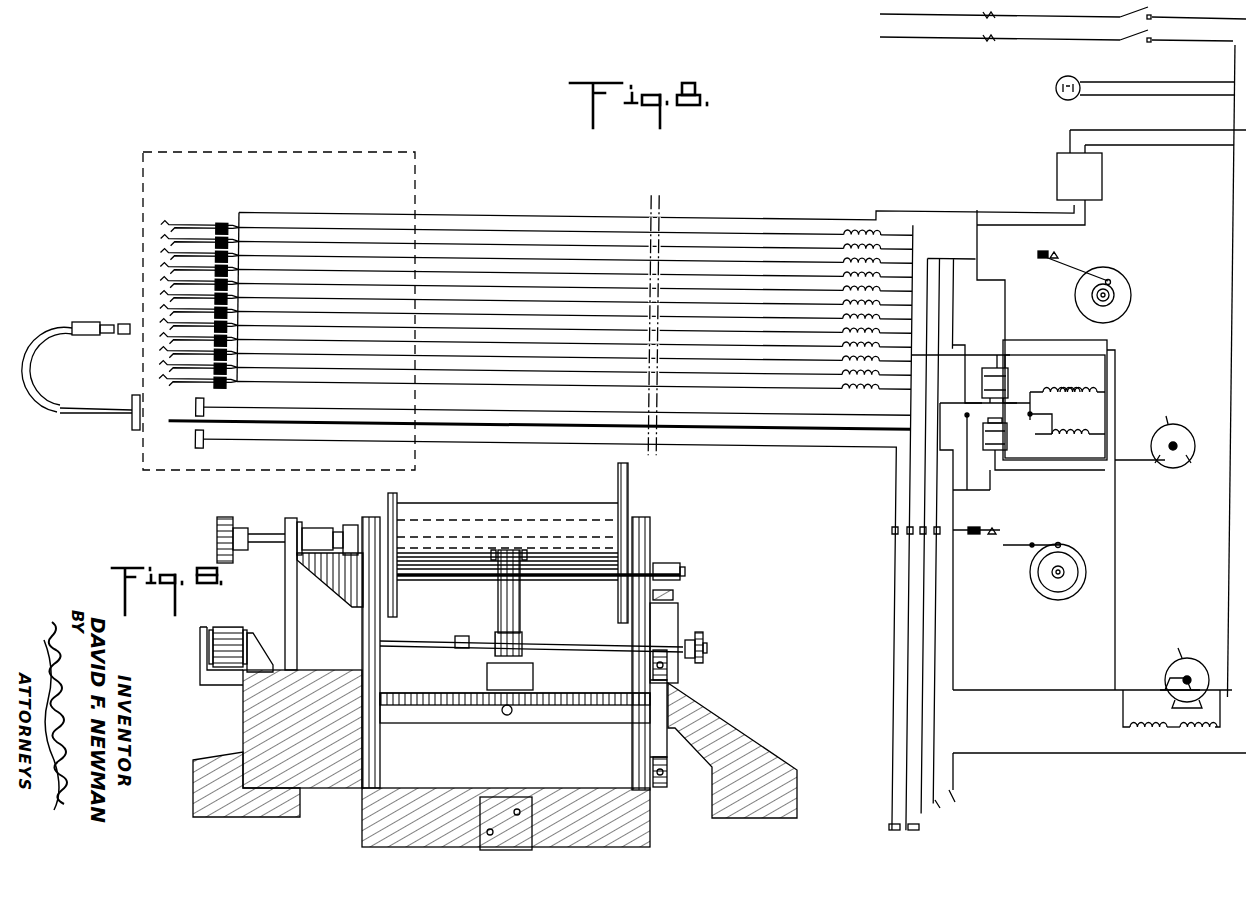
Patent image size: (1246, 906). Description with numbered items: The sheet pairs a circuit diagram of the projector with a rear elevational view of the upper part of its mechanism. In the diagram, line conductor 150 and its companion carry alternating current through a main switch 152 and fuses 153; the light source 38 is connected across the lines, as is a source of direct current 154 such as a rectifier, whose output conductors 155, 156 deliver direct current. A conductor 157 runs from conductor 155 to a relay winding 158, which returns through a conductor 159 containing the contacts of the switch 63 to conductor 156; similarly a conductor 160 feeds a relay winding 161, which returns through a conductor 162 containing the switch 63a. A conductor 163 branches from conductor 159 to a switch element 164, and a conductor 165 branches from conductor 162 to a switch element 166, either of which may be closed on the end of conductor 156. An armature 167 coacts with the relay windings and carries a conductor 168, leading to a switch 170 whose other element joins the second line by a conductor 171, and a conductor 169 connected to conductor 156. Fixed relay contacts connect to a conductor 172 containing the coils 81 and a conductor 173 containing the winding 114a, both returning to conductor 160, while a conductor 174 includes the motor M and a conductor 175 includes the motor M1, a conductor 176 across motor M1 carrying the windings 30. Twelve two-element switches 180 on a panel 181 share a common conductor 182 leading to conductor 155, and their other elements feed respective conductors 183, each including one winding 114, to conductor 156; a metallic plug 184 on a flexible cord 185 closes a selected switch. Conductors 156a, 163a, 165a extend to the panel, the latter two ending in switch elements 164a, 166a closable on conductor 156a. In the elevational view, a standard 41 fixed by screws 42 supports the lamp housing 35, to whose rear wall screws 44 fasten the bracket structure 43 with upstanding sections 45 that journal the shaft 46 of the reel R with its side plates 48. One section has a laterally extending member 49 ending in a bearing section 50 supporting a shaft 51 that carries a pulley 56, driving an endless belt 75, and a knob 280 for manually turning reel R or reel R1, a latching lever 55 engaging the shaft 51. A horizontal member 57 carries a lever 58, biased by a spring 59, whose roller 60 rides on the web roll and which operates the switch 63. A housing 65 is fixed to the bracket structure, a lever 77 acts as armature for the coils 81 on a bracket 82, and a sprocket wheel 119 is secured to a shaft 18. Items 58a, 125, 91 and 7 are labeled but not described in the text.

In FIG. 8, the panel 181 is at (335, 152).
In FIG. 8, the two-element switch 180 is at (199, 257).
In FIG. 8, the common conductor 182 is at (516, 218).
In FIG. 8, the conductors 183 is at (702, 242).
In FIG. 8, the winding 114 is at (854, 260).
In FIG. 8, the conductor 163a is at (894, 412).
In FIG. 8, the switch element 164a is at (196, 412).
In FIG. 8, the conductor 165a is at (742, 430).
In FIG. 8, the conductor 156a is at (590, 448).
In FIG. 8, the switch element 166a is at (200, 452).
In FIG. 8, the plug 184 is at (98, 322).
In FIG. 8, the flexible cord 185 is at (28, 370).
In FIG. 8, the fuses 153 is at (982, 40).
In FIG. 8, the main switch 152 is at (1139, 40).
In FIG. 8, the conductor 150 is at (1232, 312).
In FIG. 8, the incandescent lamp bulb 38 is at (1056, 88).
In FIG. 8, the source of direct current 154 is at (1100, 162).
In FIG. 8, the output conductor 155 is at (1005, 208).
In FIG. 8, the output conductor 156 is at (922, 256).
In FIG. 8, the conductor 159 is at (990, 242).
In FIG. 8, the conductor 163 is at (962, 300).
In FIG. 8, the conductor 169 is at (972, 332).
In FIG. 8, the conductor 157 is at (1004, 302).
In FIG. 8, the electrical switch 63 is at (1060, 252).
In FIG. 9, the electrical switch 63 is at (476, 652).
In FIG. 8, the lever 58 is at (1062, 262).
In FIG. 9, the lever 58 is at (518, 596).
In FIG. 8, the reel R is at (1128, 274).
In FIG. 9, the reel R is at (631, 502).
In FIG. 8, the conductor 160 is at (1034, 342).
In FIG. 8, the coils 81 is at (1046, 388).
In FIG. 9, the coils 81 is at (230, 628).
In FIG. 8, the winding 114a is at (1092, 440).
In FIG. 8, the relay winding 158 is at (986, 380).
In FIG. 8, the conductor 174 is at (958, 368).
In FIG. 8, the motor M is at (1164, 424).
In FIG. 8, the armature 167 is at (996, 416).
In FIG. 8, the relay winding 161 is at (998, 446).
In FIG. 8, the conductor 172 is at (1044, 408).
In FIG. 8, the conductor 173 is at (1040, 426).
In FIG. 8, the conductor 168 is at (962, 414).
In FIG. 8, the conductor 175 is at (952, 472).
In FIG. 8, the conductor 162 is at (990, 490).
In FIG. 8, the switch 63a is at (1020, 526).
In FIG. 8, the conductor 165 is at (900, 544).
In FIG. 8, the contact arm 58a is at (1016, 548).
In FIG. 8, the reel R1 is at (1086, 557).
In FIG. 8, the motor M1 is at (1182, 660).
In FIG. 8, the motor shaft 125 is at (1210, 674).
In FIG. 8, the conductor 176 is at (1096, 704).
In FIG. 8, the windings 30 is at (1130, 730).
In FIG. 8, the conductor 171 is at (1098, 754).
In FIG. 8, the switch 170 is at (956, 804).
In FIG. 8, the switch element 164 is at (914, 832).
In FIG. 8, the switch element 166 is at (894, 828).
In FIG. 9, the knob 280 is at (216, 534).
In FIG. 9, the shaft 51 is at (258, 524).
In FIG. 9, the pulley 56 is at (294, 522).
In FIG. 9, the bearing section 50 is at (314, 530).
In FIG. 9, the latching lever 55 is at (344, 524).
In FIG. 9, the endless belt 75 is at (288, 582).
In FIG. 9, the laterally extending member 49 is at (332, 586).
In FIG. 9, the shaft 46 is at (373, 518).
In FIG. 9, the side plates 48 is at (398, 496).
In FIG. 9, the roller 60 is at (554, 576).
In FIG. 9, the bearing 91 is at (652, 560).
In FIG. 9, the spring 59 is at (524, 632).
In FIG. 9, the horizontal member 57 is at (448, 636).
In FIG. 9, the upstanding sections 45 is at (368, 634).
In FIG. 9, the sprocket wheel 119 is at (704, 630).
In FIG. 9, the shaft 18 is at (704, 654).
In FIG. 9, the screws 44 is at (670, 664).
In FIG. 9, the bracket structure 43 is at (577, 690).
In FIG. 9, the housing 65 is at (314, 672).
In FIG. 9, the lever 77 is at (262, 636).
In FIG. 9, the bracket 82 is at (202, 688).
In FIG. 9, the base 7 is at (206, 768).
In FIG. 9, the lamp housing 35 is at (650, 830).
In FIG. 9, the screws 42 is at (492, 830).
In FIG. 9, the standard 41 is at (510, 830).